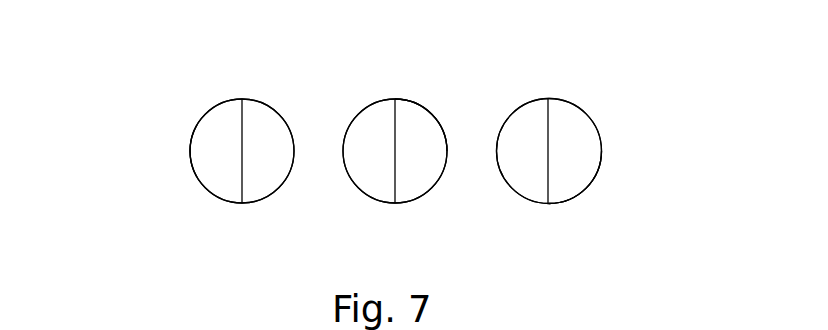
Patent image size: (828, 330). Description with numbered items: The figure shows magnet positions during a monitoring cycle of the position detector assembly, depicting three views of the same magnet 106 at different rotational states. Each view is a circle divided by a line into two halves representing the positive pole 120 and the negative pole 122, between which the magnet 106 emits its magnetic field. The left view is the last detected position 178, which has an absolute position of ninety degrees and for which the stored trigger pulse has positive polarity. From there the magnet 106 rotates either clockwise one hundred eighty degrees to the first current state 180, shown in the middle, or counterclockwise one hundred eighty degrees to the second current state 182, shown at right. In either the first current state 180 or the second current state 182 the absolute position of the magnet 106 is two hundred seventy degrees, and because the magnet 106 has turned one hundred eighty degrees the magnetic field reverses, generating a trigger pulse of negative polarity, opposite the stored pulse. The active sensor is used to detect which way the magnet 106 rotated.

The magnet 106 is at (210, 193).
The positive pole 120 is at (270, 125).
The negative pole 122 is at (208, 135).
The last detected position 178 is at (216, 92).
The first current state 180 is at (347, 97).
The second current state 182 is at (585, 90).